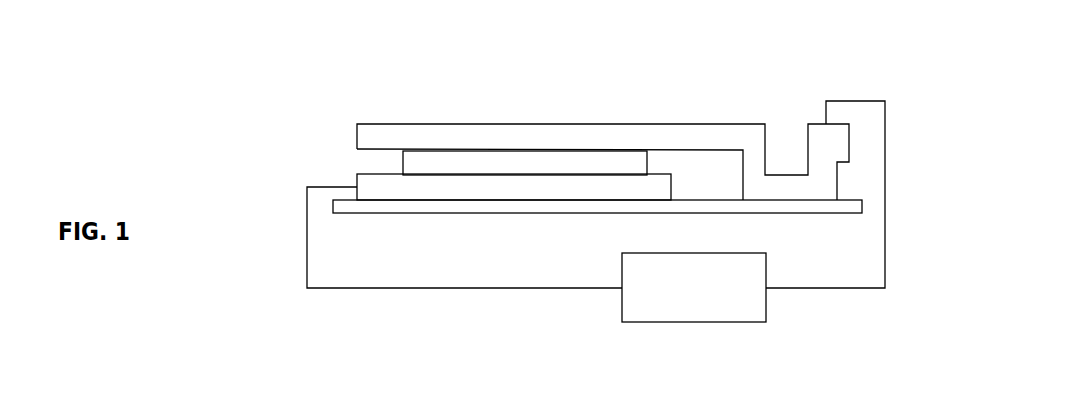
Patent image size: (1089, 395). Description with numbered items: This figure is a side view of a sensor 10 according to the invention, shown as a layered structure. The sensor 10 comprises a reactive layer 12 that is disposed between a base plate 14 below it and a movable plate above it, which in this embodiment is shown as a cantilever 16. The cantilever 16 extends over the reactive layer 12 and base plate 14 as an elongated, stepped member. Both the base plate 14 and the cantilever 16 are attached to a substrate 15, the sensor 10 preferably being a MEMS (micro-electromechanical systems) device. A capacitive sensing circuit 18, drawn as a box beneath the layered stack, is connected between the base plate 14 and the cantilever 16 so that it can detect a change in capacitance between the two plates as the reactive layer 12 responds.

The sensor 10 is at (990, 58).
The reactive layer 12 is at (403, 165).
The base plate 14 is at (356, 182).
The substrate 15 is at (853, 208).
The cantilever 16 is at (628, 123).
The capacitive sensing circuit 18 is at (766, 295).